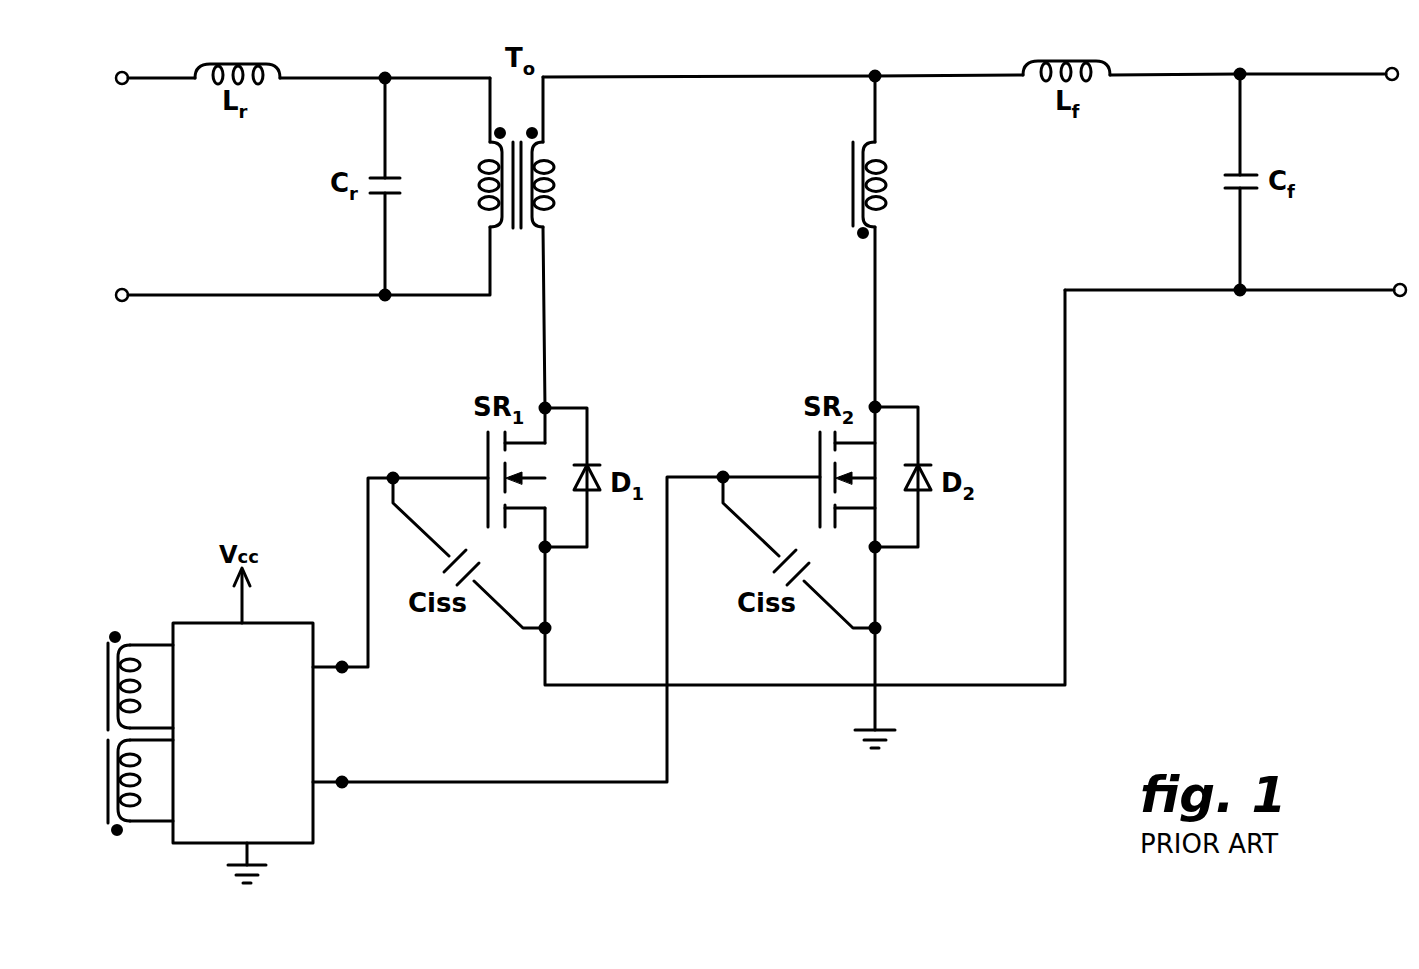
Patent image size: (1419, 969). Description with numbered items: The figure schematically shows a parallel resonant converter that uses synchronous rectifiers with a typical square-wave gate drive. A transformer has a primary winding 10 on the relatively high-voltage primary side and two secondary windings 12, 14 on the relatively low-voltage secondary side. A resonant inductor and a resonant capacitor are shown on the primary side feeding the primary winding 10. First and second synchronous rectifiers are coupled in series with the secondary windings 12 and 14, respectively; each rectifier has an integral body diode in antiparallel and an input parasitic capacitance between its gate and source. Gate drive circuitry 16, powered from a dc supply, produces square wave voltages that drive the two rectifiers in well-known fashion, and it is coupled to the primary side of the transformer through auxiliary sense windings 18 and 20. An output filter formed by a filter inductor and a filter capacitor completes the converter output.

The primary winding 10 is at (493, 193).
The secondary winding 12 is at (554, 183).
The secondary winding 14 is at (886, 183).
The gate drive circuitry 16 is at (267, 823).
The auxiliary sense winding 18 is at (141, 642).
The auxiliary sense winding 20 is at (140, 824).